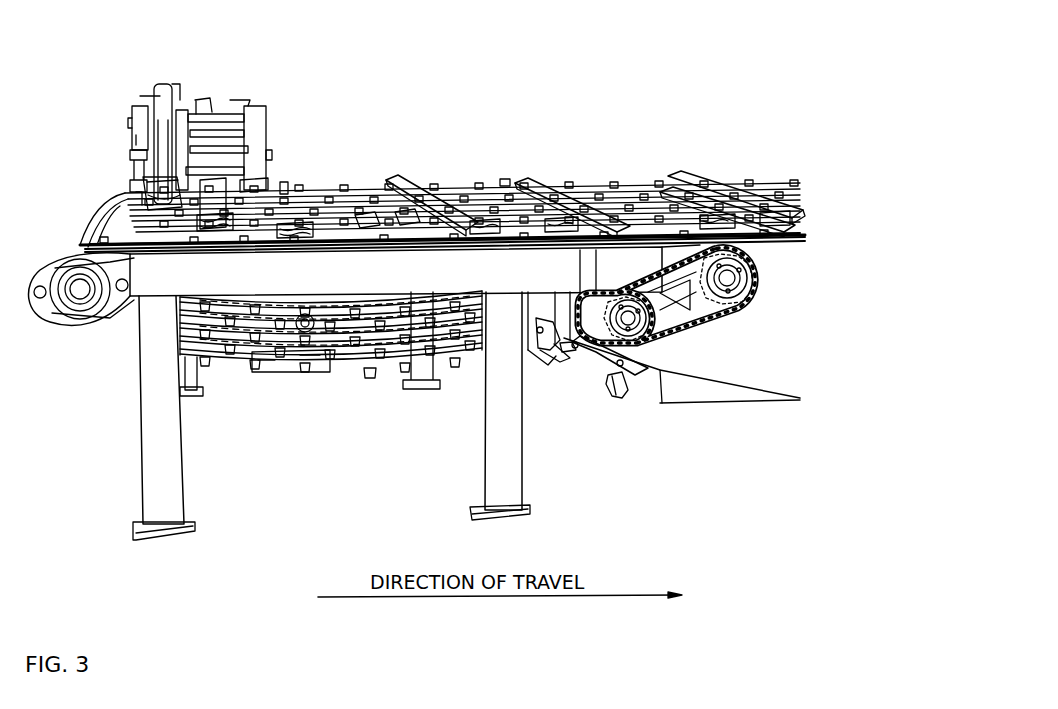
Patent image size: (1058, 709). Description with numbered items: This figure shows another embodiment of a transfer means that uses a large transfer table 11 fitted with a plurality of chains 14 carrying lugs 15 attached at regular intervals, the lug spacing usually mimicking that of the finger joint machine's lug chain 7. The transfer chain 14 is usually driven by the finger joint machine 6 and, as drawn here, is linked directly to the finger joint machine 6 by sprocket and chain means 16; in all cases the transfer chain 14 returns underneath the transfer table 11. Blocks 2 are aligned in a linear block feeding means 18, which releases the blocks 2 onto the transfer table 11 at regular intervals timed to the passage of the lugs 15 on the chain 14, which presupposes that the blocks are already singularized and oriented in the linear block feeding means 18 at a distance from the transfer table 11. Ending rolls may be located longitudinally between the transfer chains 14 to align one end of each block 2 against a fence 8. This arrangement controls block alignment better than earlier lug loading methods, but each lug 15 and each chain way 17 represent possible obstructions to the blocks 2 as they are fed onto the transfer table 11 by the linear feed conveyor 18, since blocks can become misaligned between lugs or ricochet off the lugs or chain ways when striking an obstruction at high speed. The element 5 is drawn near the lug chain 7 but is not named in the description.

The block 2 is at (404, 178).
The pin 5 is at (625, 418).
The finger joint machine 6 is at (791, 323).
The lug chain 7 is at (586, 390).
The fence 8 is at (92, 212).
The transfer table 11 is at (348, 286).
The chain 14 is at (337, 370).
The lug 15 is at (505, 180).
The sprocket and chain means 16 is at (706, 325).
The chain way 17 is at (288, 193).
The linear block feeding means 18 is at (244, 106).